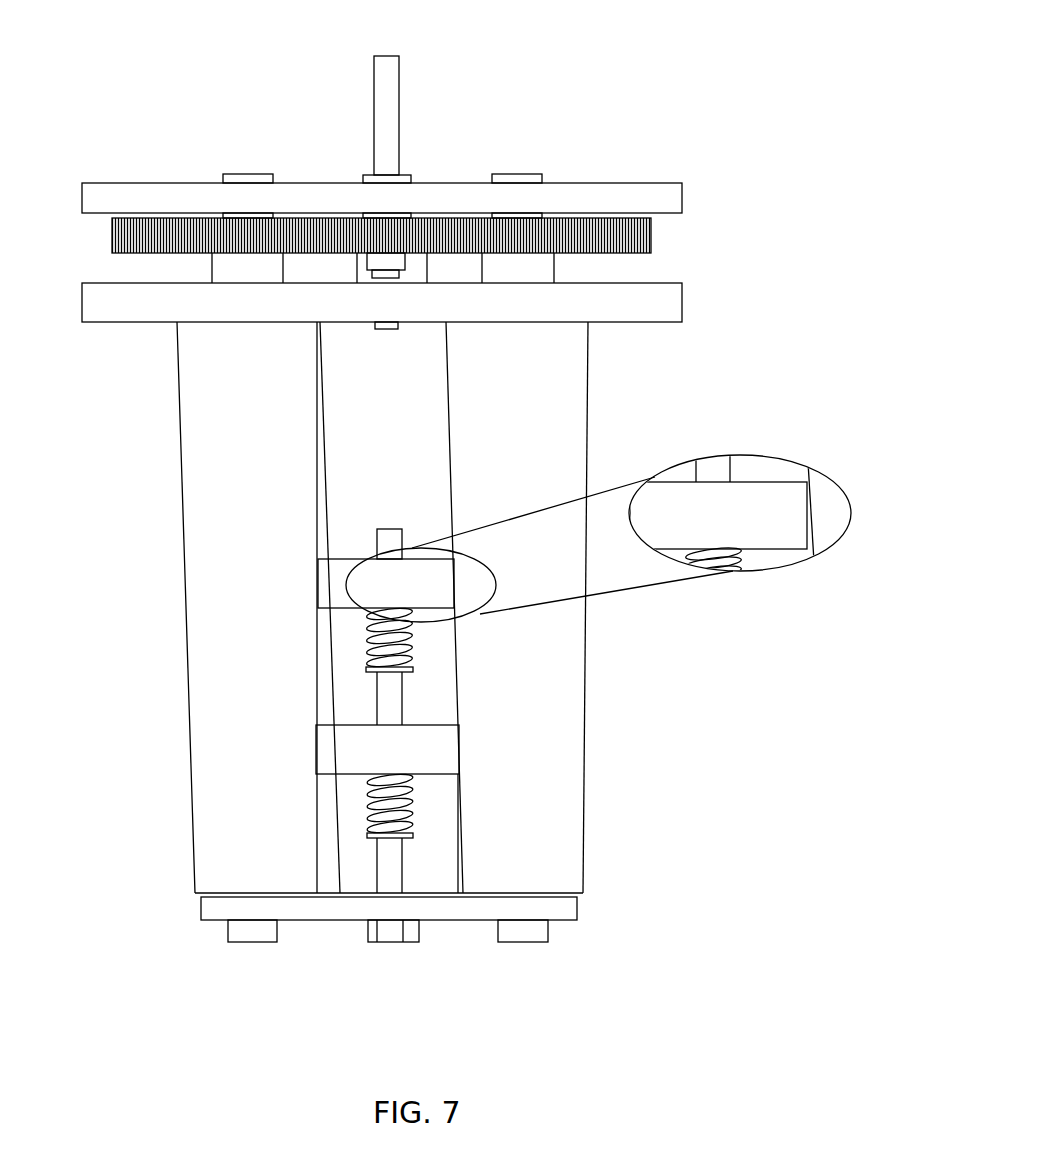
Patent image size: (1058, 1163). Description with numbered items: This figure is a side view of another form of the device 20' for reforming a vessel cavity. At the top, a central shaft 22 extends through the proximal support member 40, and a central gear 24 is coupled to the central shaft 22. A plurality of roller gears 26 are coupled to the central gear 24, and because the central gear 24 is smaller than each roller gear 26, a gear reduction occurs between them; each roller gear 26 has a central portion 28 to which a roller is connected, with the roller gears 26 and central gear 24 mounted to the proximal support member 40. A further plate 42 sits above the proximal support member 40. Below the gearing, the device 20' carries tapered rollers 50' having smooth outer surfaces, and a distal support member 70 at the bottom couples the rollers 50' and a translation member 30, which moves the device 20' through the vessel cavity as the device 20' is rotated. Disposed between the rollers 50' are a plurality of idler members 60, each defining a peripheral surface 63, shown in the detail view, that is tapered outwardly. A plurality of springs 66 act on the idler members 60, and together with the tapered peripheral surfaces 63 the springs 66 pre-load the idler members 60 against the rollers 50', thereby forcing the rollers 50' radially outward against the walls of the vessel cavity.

The device for reforming a vessel cavity 20' is at (406, 476).
The central shaft 22 is at (380, 97).
The central gear 24 is at (373, 260).
The roller gears 26 is at (627, 235).
The central portion 28 is at (542, 275).
The translation member 30 is at (392, 873).
The proximal support member 40 is at (112, 310).
The upper plate 42 is at (105, 195).
The tapered rollers 50' is at (392, 607).
The idler member 60 is at (330, 595).
The peripheral surface 63 is at (806, 502).
The springs 66 is at (413, 648).
The distal support member 70 is at (207, 915).